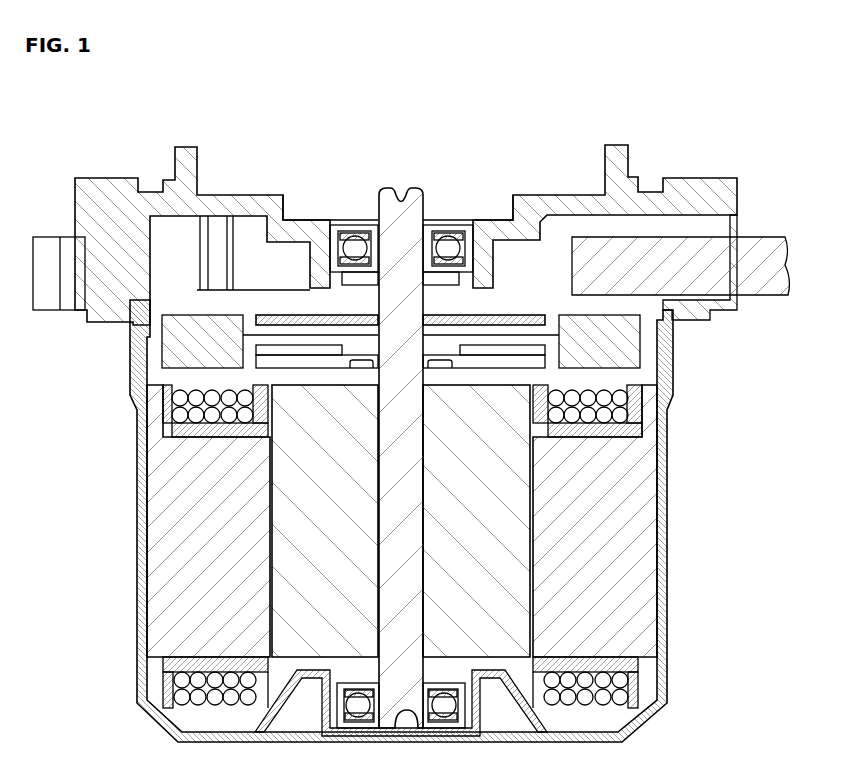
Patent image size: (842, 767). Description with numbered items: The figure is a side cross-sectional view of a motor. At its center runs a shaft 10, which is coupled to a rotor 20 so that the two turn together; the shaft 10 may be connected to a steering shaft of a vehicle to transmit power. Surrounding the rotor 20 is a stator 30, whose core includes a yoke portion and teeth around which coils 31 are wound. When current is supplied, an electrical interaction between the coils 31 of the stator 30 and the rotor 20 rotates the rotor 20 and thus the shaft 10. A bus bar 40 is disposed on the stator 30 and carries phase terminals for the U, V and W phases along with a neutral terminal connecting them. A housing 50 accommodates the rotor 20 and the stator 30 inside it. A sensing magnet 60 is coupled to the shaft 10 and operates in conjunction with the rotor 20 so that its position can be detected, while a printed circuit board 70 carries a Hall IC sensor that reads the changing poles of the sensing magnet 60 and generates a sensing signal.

The shaft 10 is at (398, 612).
The rotor 20 is at (476, 518).
The stator 30 is at (610, 486).
The coils 31 is at (622, 415).
The bus bar 40 is at (648, 363).
The housing 50 is at (137, 530).
The sensing magnet 60 is at (253, 353).
The printed circuit board 70 is at (253, 316).